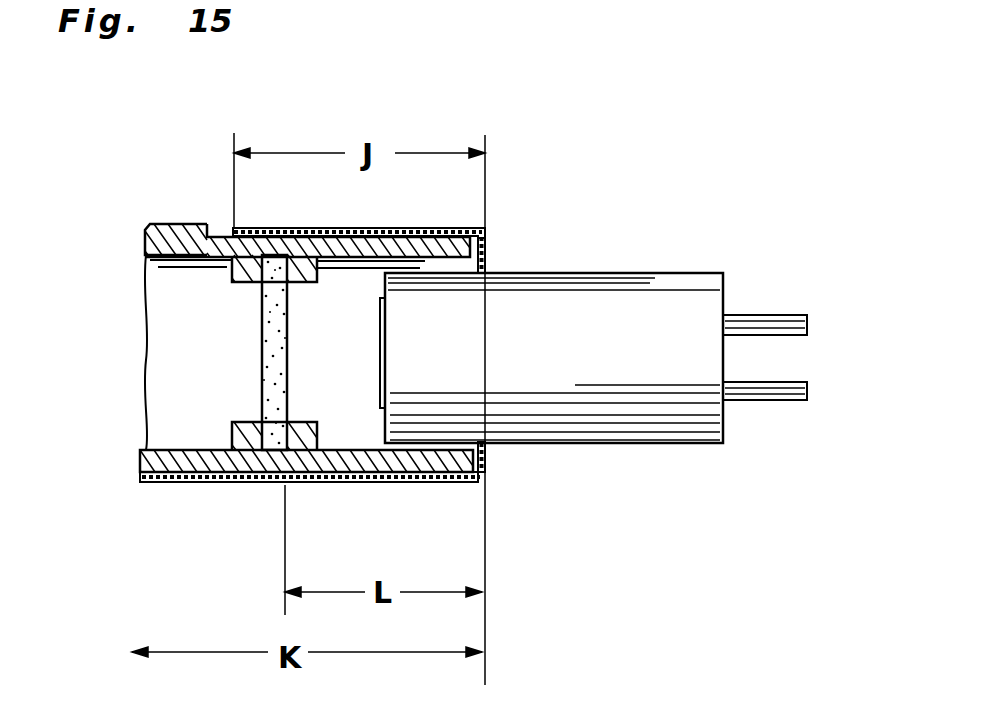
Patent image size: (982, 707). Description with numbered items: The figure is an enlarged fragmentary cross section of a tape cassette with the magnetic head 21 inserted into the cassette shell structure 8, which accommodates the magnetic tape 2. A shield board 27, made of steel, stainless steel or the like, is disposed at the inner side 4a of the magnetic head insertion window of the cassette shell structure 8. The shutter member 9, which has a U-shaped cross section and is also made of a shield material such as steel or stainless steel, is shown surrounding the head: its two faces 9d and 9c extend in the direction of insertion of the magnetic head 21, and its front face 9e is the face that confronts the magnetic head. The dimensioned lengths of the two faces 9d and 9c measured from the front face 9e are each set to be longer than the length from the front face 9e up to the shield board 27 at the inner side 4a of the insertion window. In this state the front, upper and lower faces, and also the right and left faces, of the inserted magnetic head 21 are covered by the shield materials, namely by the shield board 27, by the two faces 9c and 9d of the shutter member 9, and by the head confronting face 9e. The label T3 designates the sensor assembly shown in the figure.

The magnetic tape 2 is at (380, 367).
The inner side of the insertion window 4a is at (345, 285).
The cassette shell structure 8 is at (180, 228).
The shutter member 9 is at (487, 477).
The face of the shutter member 9c is at (430, 483).
The face of the shutter member 9d is at (463, 230).
The front face of the shutter member 9e is at (493, 262).
The magnetic head 21 is at (670, 297).
The shield board 27 is at (273, 338).
The temperature sensor assembly T3 is at (674, 181).